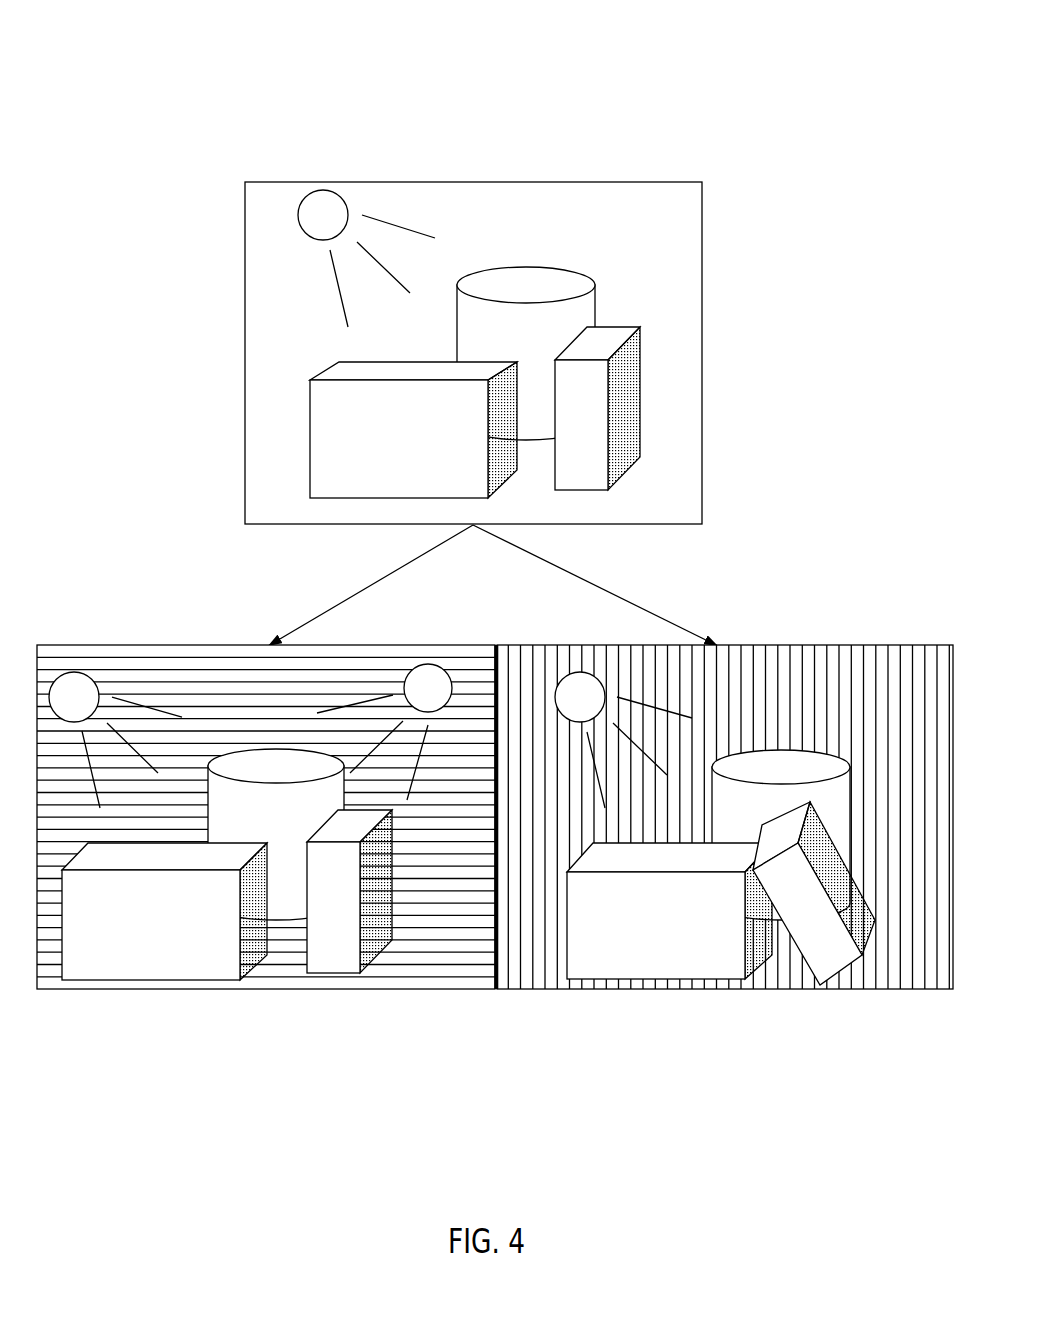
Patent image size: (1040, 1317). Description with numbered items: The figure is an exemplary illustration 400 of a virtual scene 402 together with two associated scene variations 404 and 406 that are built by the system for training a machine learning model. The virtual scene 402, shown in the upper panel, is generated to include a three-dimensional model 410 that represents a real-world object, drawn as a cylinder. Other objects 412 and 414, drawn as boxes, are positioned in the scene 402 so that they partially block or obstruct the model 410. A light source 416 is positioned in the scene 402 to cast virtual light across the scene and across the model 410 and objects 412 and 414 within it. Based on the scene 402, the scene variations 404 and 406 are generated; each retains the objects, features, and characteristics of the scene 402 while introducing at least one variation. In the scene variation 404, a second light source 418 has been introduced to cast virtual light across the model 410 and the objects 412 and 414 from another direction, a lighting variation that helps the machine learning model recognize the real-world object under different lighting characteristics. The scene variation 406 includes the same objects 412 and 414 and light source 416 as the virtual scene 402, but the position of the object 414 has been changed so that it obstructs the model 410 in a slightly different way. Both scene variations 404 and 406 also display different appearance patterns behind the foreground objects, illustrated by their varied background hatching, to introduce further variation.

The illustration 400 is at (850, 88).
The virtual scene 402 is at (245, 250).
The scene variation 404 is at (247, 645).
The scene variation 406 is at (765, 646).
The 3D model 410 is at (555, 267).
The object 412 is at (308, 428).
The object 414 is at (640, 410).
The light source 416 is at (302, 233).
The second light source 418 is at (426, 664).